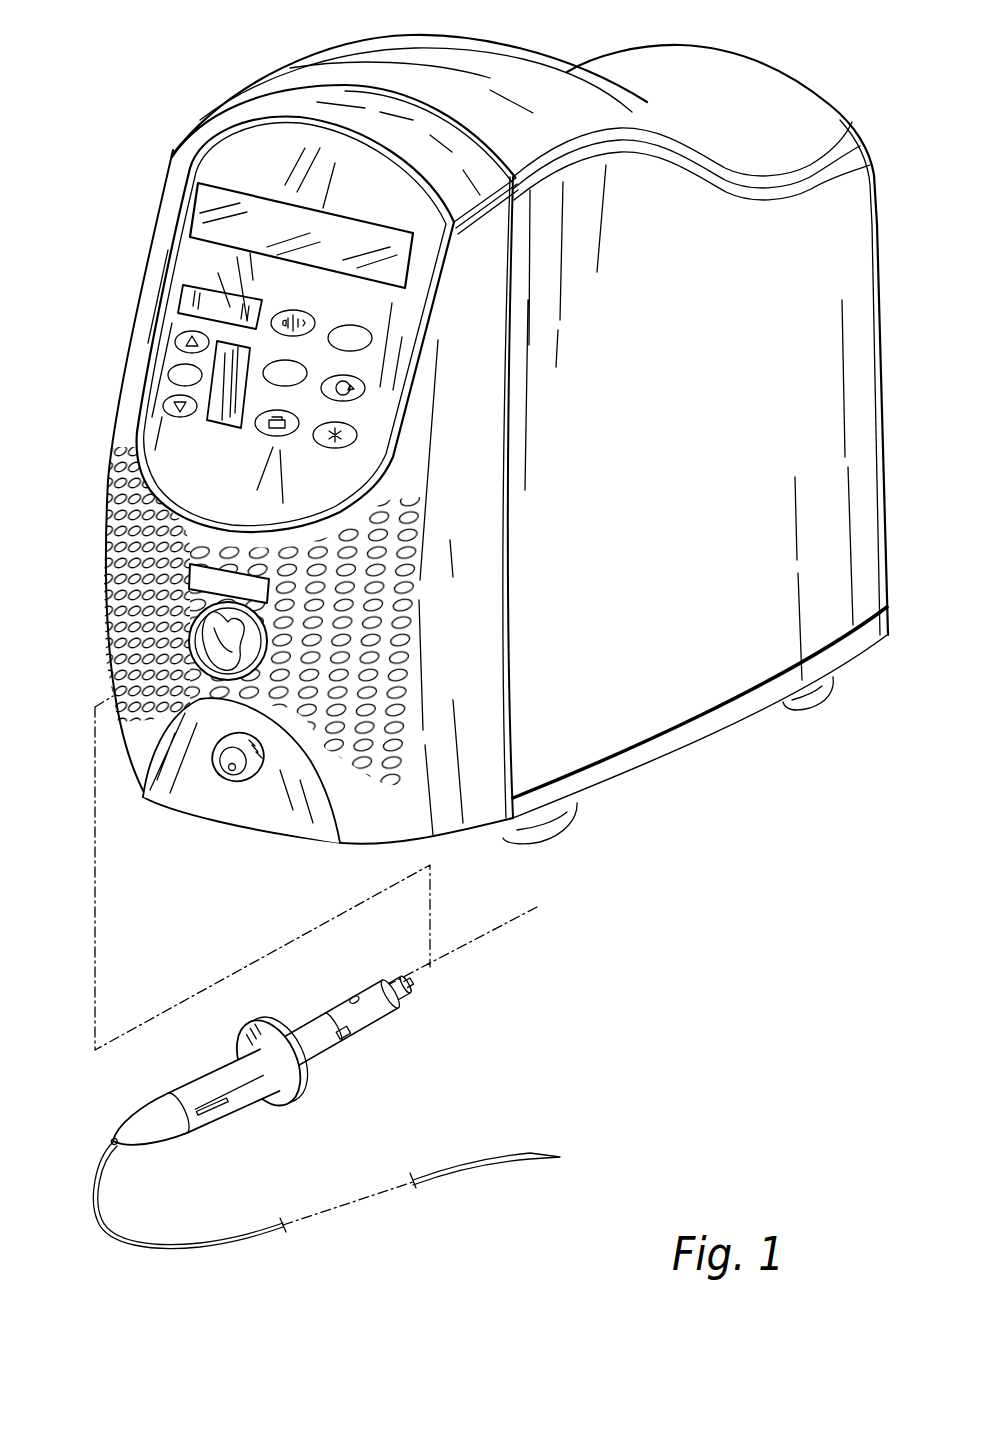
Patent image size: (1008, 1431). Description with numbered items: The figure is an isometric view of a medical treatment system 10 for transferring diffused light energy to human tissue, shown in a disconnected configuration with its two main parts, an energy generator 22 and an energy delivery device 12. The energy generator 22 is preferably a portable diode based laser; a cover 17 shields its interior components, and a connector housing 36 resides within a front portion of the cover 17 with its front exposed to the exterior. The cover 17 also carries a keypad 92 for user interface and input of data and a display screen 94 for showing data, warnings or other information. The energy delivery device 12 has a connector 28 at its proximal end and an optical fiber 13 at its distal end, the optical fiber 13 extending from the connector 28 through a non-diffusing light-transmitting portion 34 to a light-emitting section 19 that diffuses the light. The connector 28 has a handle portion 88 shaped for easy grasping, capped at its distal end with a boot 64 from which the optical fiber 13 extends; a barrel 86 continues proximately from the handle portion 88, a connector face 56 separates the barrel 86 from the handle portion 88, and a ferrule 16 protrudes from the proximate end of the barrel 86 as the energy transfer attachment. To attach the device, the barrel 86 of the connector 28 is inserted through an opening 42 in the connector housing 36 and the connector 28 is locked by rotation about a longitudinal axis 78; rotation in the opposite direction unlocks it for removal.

The medical treatment system 10 is at (125, 105).
The energy delivery device 12 is at (392, 1050).
The optical fiber 13 is at (332, 1151).
The ferrule 16 is at (391, 979).
The cover 17 is at (777, 572).
The light-emitting section 19 is at (490, 1162).
The energy generator 22 is at (695, 765).
The connector 28 is at (392, 996).
The light-transmitting portion 34 is at (222, 1243).
The connector housing 36 is at (190, 690).
The opening 42 is at (207, 676).
The connector face 56 is at (273, 1097).
The boot 64 is at (147, 1122).
The longitudinal axis 78 is at (507, 918).
The barrel 86 is at (333, 1013).
The handle portion 88 is at (203, 1083).
The keypad 92 is at (150, 309).
The display screen 94 is at (273, 223).